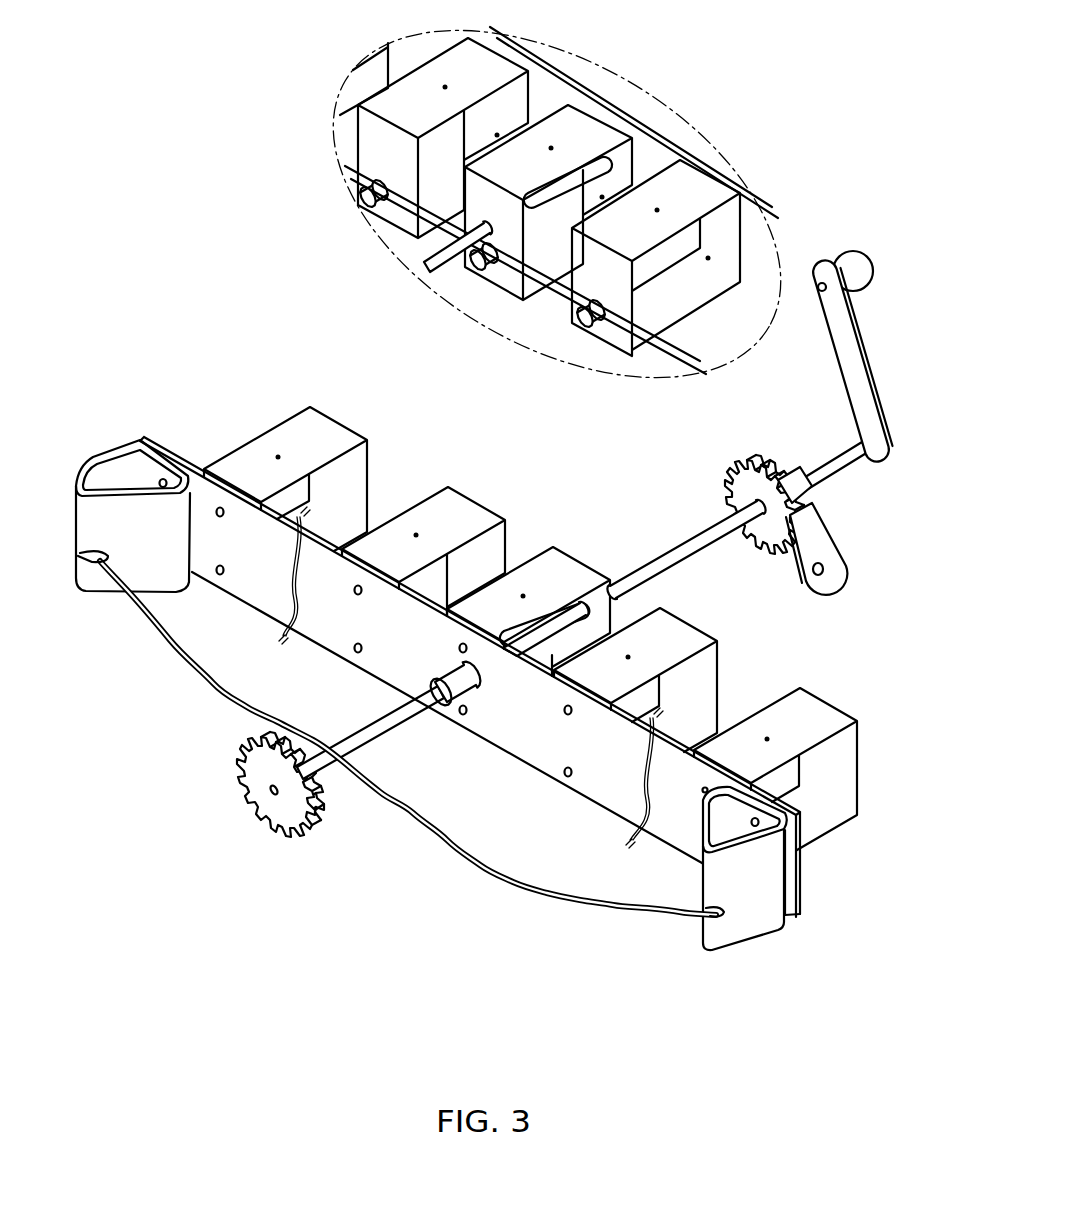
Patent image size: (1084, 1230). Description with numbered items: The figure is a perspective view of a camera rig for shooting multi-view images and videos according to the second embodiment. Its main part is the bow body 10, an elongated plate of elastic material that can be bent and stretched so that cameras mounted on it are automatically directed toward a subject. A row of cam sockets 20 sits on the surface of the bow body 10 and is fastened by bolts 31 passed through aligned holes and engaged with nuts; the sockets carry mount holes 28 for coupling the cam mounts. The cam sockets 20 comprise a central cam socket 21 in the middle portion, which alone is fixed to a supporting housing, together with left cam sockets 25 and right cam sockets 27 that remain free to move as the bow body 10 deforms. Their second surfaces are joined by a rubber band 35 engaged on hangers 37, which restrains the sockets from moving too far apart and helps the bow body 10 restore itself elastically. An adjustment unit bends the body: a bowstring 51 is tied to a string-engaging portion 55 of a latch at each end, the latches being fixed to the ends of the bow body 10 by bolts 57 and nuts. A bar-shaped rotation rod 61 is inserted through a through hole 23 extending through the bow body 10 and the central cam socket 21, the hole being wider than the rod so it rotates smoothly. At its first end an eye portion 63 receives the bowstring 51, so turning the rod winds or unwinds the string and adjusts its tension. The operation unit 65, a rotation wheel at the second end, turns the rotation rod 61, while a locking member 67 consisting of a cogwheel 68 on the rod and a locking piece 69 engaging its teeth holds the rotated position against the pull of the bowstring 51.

The bow body 10 is at (600, 797).
The cam sockets 20 is at (675, 499).
The central cam socket 21 is at (582, 553).
The through hole 23 is at (453, 702).
The left cam sockets 25 is at (340, 420).
The right cam sockets 27 is at (822, 690).
The mount holes 28 is at (278, 456).
The bolts 31 is at (218, 508).
The rubber band 35 is at (556, 305).
The hangers 37 is at (360, 206).
The bowstring 51 is at (652, 913).
The string-engaging portion 55 is at (725, 918).
The bolts 57 is at (162, 479).
The rotation rod 61 is at (727, 530).
The eye portion 63 is at (358, 744).
The operation unit 65 is at (847, 360).
The locking member 67 is at (882, 483).
The cogwheel 68 is at (800, 485).
The locking piece 69 is at (835, 566).